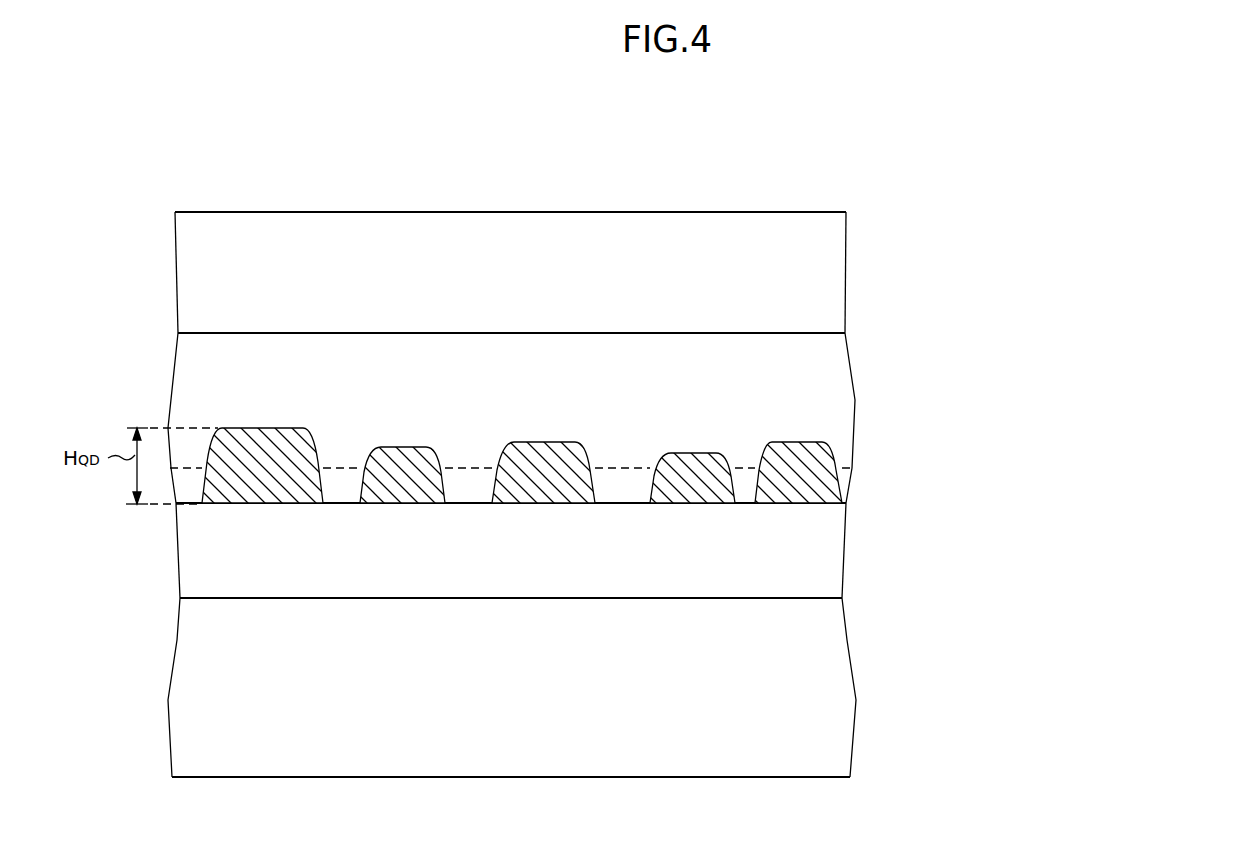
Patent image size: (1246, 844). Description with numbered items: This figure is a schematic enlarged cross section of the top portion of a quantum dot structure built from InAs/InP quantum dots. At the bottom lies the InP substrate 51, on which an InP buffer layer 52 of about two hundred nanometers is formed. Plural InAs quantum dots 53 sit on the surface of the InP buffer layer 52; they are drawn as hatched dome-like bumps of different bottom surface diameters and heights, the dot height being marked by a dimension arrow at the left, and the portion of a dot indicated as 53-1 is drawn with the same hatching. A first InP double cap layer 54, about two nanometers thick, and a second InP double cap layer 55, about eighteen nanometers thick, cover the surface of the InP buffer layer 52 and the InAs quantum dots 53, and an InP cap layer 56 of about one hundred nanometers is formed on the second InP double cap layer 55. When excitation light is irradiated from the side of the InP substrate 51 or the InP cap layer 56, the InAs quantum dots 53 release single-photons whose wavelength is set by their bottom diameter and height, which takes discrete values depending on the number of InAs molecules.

The InP substrate 51 is at (850, 680).
The InP buffer layer 52 is at (830, 548).
The InAs quantum dot 53 is at (561, 332).
The quantum dot (upper portion above first cap layer) 53-1 is at (260, 424).
The first InP double cap layer 54 is at (848, 485).
The second InP double cap layer 55 is at (855, 395).
The InP cap layer 56 is at (828, 267).